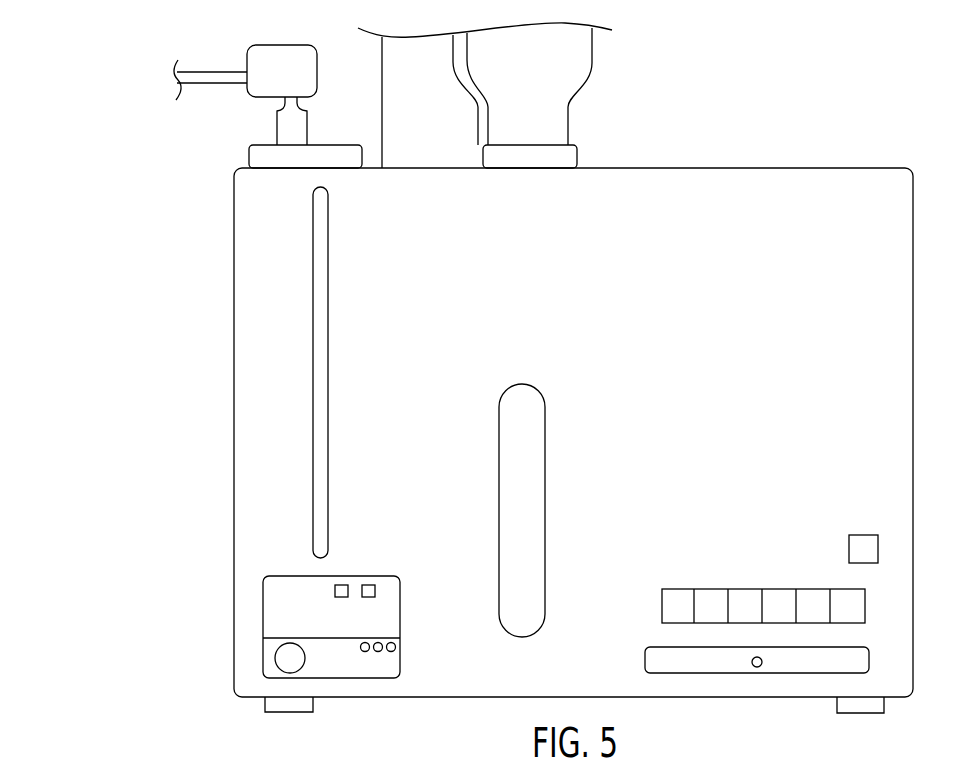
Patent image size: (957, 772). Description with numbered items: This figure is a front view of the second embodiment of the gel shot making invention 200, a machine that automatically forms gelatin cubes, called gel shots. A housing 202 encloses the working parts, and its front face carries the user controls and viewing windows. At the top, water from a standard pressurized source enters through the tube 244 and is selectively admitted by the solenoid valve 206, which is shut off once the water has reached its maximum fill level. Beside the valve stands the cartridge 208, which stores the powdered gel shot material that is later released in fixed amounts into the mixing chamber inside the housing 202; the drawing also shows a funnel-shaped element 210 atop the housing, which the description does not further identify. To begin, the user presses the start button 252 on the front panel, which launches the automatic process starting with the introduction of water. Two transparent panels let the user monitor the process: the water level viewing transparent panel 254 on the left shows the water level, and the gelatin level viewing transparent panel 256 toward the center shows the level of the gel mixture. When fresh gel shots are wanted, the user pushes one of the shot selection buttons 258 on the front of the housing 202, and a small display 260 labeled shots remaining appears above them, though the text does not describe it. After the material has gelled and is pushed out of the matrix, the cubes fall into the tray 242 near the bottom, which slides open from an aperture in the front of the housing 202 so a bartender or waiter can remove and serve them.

The second embodiment of the invention 200 is at (138, 161).
The housing 202 is at (238, 388).
The solenoid valve 206 is at (280, 58).
The cartridge 208 is at (420, 52).
The funnel / inlet 210 is at (560, 97).
The tray 242 is at (655, 660).
The tube 244 is at (213, 77).
The start button 252 is at (288, 658).
The water level viewing transparent panel 254 is at (317, 305).
The gelatin level viewing transparent panel 256 is at (513, 572).
The shot selection buttons 258 is at (858, 607).
The shots remaining display 260 is at (864, 535).